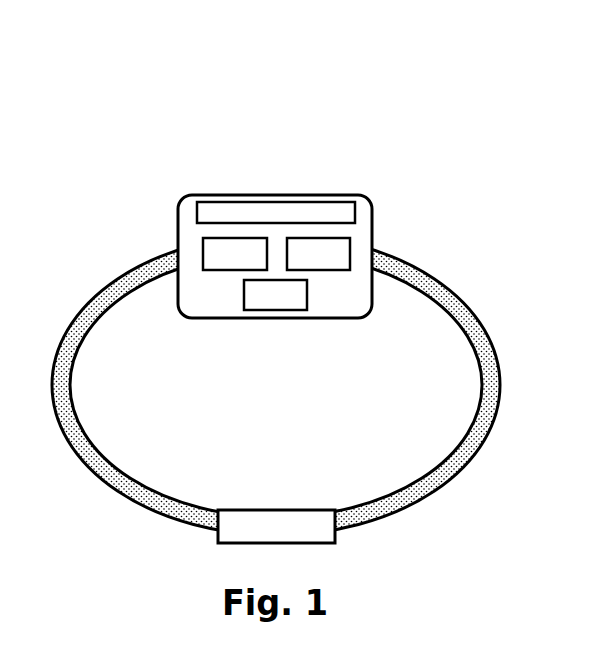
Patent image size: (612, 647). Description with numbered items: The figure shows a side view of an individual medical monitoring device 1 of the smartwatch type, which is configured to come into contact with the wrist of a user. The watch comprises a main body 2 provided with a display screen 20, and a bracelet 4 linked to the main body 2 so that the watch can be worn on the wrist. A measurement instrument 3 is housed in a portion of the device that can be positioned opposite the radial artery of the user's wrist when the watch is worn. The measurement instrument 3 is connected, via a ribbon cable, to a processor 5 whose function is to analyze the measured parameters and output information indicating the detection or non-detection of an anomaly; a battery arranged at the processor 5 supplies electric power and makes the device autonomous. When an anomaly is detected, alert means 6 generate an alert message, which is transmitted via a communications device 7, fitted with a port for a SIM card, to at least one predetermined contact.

The individual medical monitoring device 1 is at (321, 118).
The main body 2 is at (231, 192).
The measurement instrument 3 is at (270, 510).
The bracelet 4 is at (112, 283).
The processor 5 is at (323, 270).
The alert means 6 is at (228, 270).
The communications device 7 is at (273, 310).
The display screen 20 is at (355, 212).